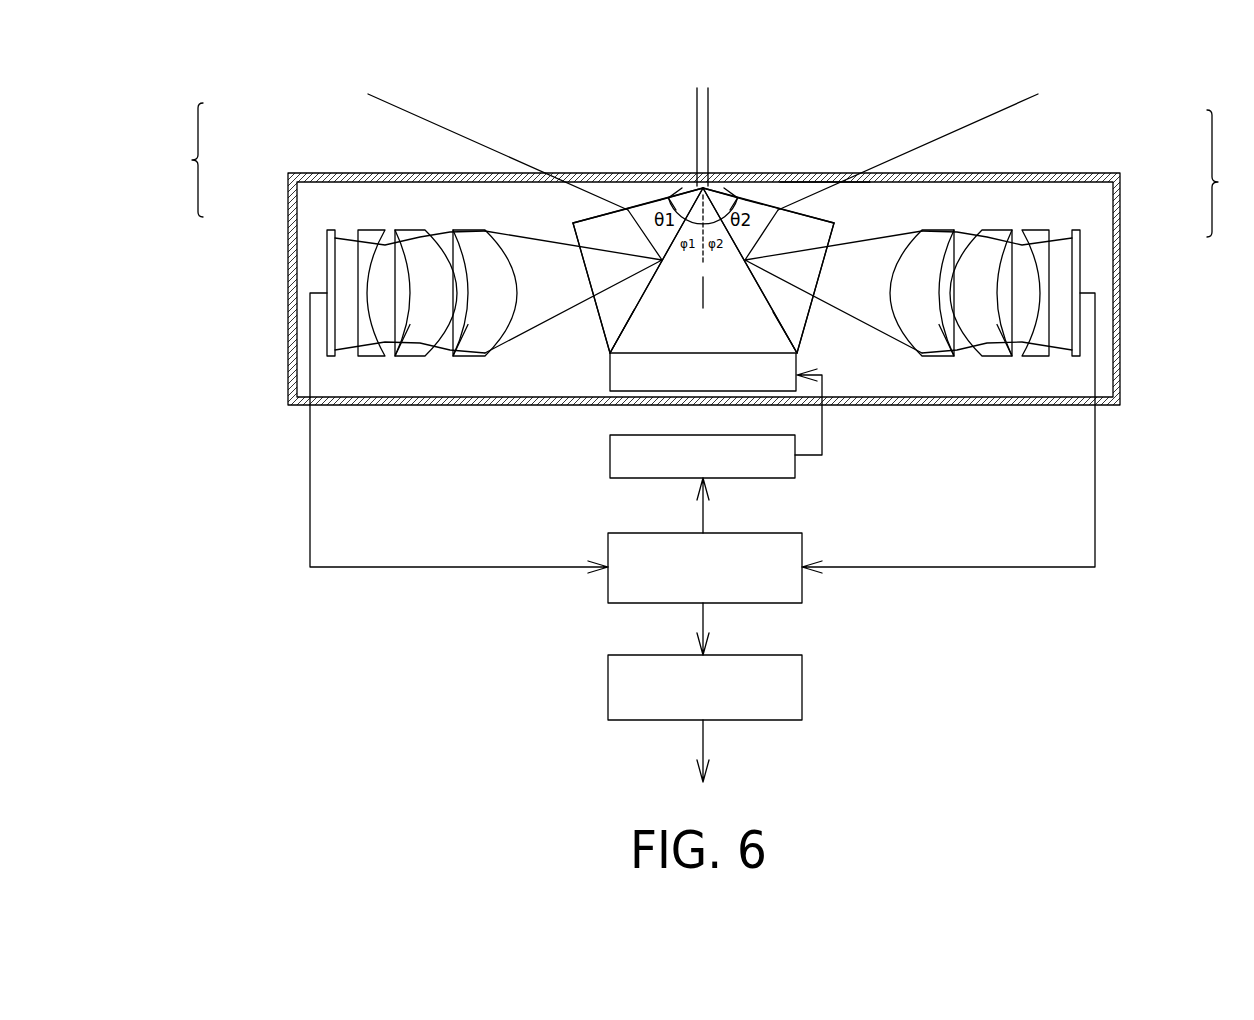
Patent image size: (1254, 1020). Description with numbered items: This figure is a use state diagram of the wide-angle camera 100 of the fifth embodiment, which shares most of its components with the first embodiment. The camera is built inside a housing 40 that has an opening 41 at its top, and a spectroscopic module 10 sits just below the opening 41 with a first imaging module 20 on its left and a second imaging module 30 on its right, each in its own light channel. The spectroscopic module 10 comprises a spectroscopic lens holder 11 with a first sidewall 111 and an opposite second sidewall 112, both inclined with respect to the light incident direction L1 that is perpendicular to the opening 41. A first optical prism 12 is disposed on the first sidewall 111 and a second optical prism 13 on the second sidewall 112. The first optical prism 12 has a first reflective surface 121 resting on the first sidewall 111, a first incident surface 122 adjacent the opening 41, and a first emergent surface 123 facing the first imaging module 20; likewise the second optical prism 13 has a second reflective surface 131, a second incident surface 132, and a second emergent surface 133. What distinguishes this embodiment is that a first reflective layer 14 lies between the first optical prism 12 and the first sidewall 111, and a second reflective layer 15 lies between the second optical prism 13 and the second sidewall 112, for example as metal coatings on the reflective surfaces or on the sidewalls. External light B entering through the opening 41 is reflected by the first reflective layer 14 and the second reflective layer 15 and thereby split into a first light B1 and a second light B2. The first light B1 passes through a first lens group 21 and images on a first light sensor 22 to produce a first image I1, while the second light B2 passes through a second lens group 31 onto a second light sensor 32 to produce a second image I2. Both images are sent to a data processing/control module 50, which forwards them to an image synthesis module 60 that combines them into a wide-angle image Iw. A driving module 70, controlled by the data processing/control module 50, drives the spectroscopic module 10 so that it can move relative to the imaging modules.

The wide-angle camera 100 is at (723, 22).
The spectroscopic module 10 is at (808, 335).
The spectroscopic lens holder 11 is at (703, 342).
The first sidewall 111 is at (635, 312).
The second sidewall 112 is at (771, 312).
The first optical prism 12 is at (637, 200).
The first reflective surface 121 is at (693, 187).
The first incident surface 122 is at (660, 200).
The first emergent surface 123 is at (595, 300).
The second optical prism 13 is at (769, 200).
The second reflective surface 131 is at (713, 187).
The second incident surface 132 is at (746, 200).
The second emergent surface 133 is at (813, 295).
The first reflective layer 14 is at (649, 283).
The second reflective layer 15 is at (764, 297).
The first imaging module 20 is at (181, 160).
The first lens group 21 is at (430, 250).
The first light sensor 22 is at (337, 247).
The second imaging module 30 is at (1227, 173).
The second lens group 31 is at (980, 250).
The second light sensor 32 is at (1080, 245).
The housing 40 is at (1120, 303).
The opening 41 is at (825, 176).
The data processing/control module 50 is at (608, 597).
The image synthesis module 60 is at (608, 688).
The driving module 70 is at (610, 457).
The external light B is at (960, 128).
The first light B1 is at (520, 240).
The second light B2 is at (892, 240).
The light incident direction L1 is at (707, 278).
The first image I1 is at (459, 433).
The second image I2 is at (948, 433).
The wide-angle image Iw is at (704, 764).